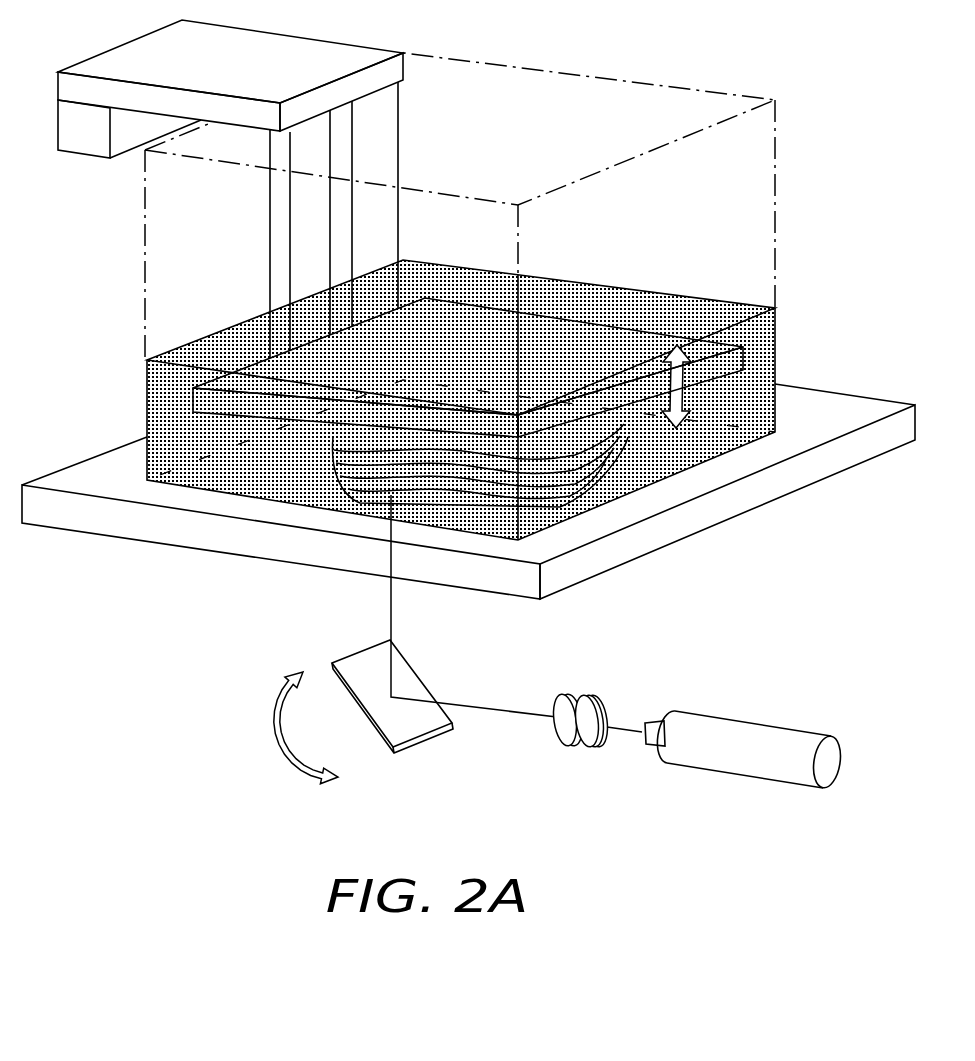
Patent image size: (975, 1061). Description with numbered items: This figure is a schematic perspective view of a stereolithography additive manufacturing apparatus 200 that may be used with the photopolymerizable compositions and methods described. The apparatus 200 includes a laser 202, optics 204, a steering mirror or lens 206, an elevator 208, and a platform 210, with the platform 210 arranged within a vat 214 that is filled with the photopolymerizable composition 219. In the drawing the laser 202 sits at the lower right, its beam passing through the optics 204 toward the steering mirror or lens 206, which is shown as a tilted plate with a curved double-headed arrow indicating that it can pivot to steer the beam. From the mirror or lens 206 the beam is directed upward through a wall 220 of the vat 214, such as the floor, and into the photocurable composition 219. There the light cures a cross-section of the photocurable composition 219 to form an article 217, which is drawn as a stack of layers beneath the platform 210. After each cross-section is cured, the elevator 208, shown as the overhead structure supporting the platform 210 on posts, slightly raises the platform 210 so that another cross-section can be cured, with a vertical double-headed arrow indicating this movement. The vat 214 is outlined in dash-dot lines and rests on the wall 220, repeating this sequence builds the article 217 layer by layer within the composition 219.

The apparatus 200 is at (710, 37).
The laser 202 is at (828, 742).
The optics 204 is at (595, 712).
The steering mirror or lens 206 is at (408, 727).
The elevator 208 is at (78, 137).
The platform 210 is at (203, 402).
The vat 214 is at (760, 183).
The article 217 is at (577, 447).
The photopolymerizable composition 219 is at (760, 350).
The wall 220 is at (651, 463).